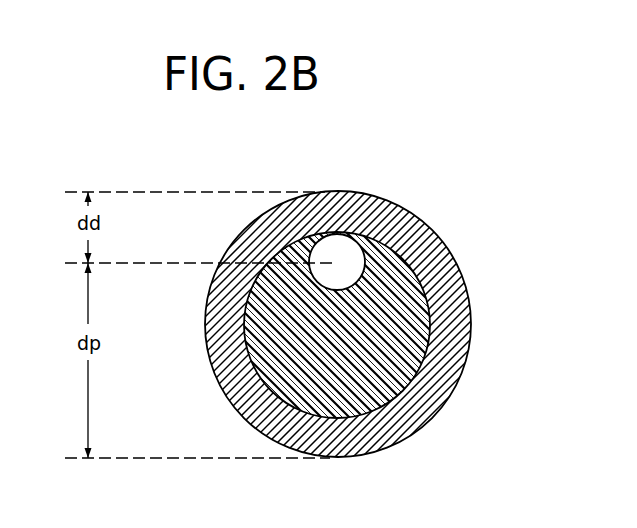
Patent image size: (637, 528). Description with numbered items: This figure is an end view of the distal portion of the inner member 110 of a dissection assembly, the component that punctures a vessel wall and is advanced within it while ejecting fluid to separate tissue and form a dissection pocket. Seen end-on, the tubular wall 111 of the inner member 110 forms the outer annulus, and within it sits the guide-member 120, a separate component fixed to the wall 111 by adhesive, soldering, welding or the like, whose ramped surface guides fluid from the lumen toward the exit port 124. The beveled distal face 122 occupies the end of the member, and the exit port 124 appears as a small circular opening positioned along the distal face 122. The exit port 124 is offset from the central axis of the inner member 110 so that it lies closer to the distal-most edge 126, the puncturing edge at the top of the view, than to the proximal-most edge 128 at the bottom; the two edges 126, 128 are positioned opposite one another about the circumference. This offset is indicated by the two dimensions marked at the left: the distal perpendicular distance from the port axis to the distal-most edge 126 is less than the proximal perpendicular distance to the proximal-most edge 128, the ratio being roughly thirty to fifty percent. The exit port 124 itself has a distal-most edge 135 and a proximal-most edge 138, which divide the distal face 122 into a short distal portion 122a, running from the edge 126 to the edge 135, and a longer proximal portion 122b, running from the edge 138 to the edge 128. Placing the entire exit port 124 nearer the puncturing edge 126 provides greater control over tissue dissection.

The inner member 110 is at (253, 177).
The tubular wall 111 is at (450, 268).
The guide-member 120 is at (389, 358).
The distal face 122 is at (241, 324).
The distal portion 122a is at (392, 203).
The proximal portion 122b is at (452, 311).
The exit port 124 is at (413, 213).
The distal-most edge 126 is at (338, 191).
The proximal-most edge 128 is at (329, 461).
The distal-most edge of exit port 135 is at (332, 232).
The proximal-most edge of exit port 138 is at (330, 291).